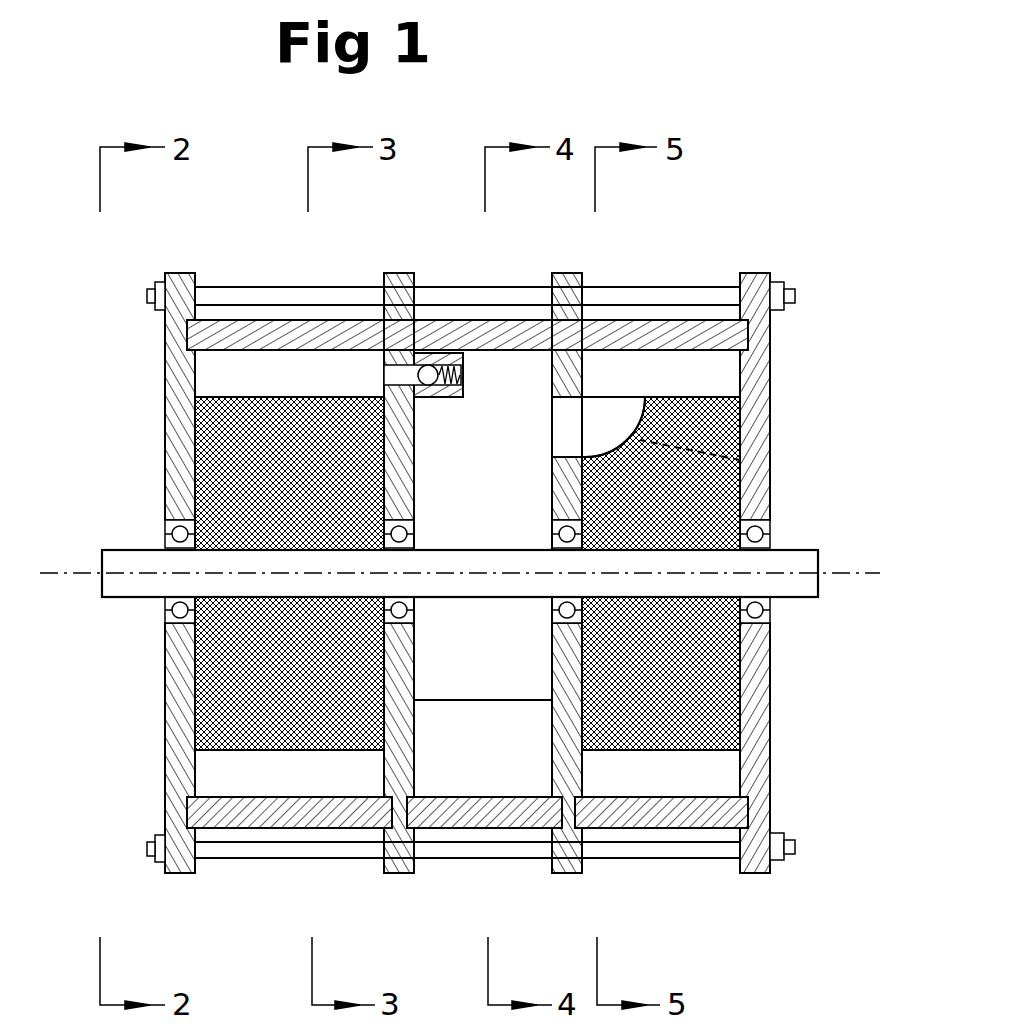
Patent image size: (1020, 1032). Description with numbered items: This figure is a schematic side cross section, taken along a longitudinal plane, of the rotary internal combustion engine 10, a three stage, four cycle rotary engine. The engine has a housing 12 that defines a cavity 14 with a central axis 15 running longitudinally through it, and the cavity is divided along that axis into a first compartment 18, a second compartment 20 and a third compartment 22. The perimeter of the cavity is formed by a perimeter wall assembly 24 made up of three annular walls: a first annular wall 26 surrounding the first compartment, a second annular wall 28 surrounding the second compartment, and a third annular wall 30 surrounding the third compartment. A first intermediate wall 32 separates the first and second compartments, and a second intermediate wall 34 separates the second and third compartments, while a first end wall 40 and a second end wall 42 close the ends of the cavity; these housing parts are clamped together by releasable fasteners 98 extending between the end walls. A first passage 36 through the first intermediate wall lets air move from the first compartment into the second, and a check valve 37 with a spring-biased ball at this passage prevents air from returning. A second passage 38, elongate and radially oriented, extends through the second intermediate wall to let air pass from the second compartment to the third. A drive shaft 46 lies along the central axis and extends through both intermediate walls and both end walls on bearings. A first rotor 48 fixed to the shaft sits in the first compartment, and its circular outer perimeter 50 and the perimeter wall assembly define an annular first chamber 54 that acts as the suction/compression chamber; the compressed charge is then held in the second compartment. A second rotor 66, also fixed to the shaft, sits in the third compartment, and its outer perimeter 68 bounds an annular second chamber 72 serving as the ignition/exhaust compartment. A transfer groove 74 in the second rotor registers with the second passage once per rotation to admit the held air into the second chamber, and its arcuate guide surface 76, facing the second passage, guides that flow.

The rotary internal combustion engine 10 is at (726, 191).
The housing 12 is at (285, 330).
The cavity 14 is at (478, 757).
The central axis 15 is at (83, 573).
The first compartment 18 is at (258, 775).
The second compartment 20 is at (512, 755).
The third compartment 22 is at (648, 775).
The perimeter wall assembly 24 is at (337, 838).
The first annular wall 26 is at (212, 805).
The second annular wall 28 is at (440, 805).
The third annular wall 30 is at (613, 812).
The first intermediate wall 32 is at (400, 850).
The second intermediate wall 34 is at (572, 860).
The first passage 36 is at (403, 350).
The check valve 37 is at (437, 353).
The second passage 38 is at (568, 398).
The first end wall 40 is at (177, 728).
The second end wall 42 is at (772, 725).
The drive shaft 46 is at (788, 562).
The first rotor 48 is at (232, 670).
The outer perimeter 50 is at (317, 752).
The first chamber 54 is at (216, 373).
The second rotor 66 is at (707, 660).
The outer perimeter 68 is at (688, 805).
The second chamber 72 is at (718, 370).
The transfer groove 74 is at (772, 460).
The guide surface 76 is at (620, 432).
The releasable fasteners 98 is at (233, 292).